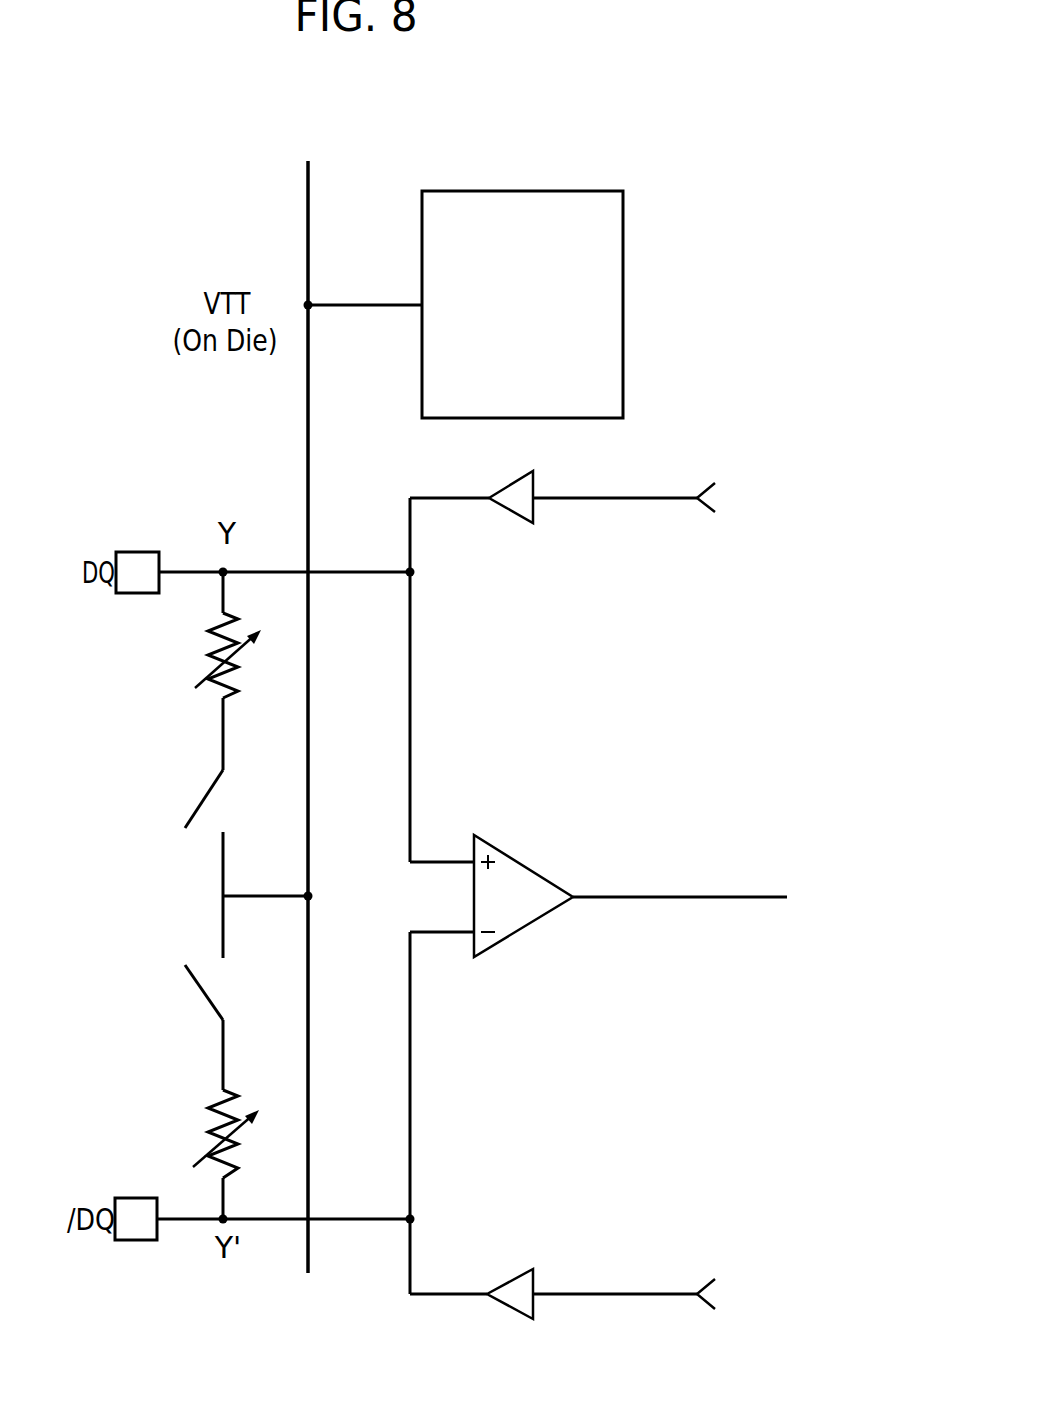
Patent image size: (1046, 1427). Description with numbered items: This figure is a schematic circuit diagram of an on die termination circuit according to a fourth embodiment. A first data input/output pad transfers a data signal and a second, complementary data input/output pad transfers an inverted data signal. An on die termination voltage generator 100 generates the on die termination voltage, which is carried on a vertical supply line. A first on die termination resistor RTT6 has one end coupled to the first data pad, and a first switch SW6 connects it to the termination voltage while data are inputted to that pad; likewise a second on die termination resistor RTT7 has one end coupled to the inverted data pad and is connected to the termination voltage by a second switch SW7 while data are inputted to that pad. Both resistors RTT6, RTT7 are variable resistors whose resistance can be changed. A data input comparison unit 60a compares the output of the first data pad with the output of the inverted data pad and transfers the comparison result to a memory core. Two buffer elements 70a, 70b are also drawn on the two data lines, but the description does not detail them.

The on die termination voltage generator 100 is at (585, 191).
The data input comparison unit 60a is at (527, 865).
The input buffer 70a is at (515, 515).
The input buffer 70b is at (512, 1278).
The first on die termination resistor RTT6 is at (198, 671).
The second on die termination resistor RTT7 is at (198, 1154).
The first switch SW6 is at (176, 864).
The second switch SW7 is at (175, 1027).